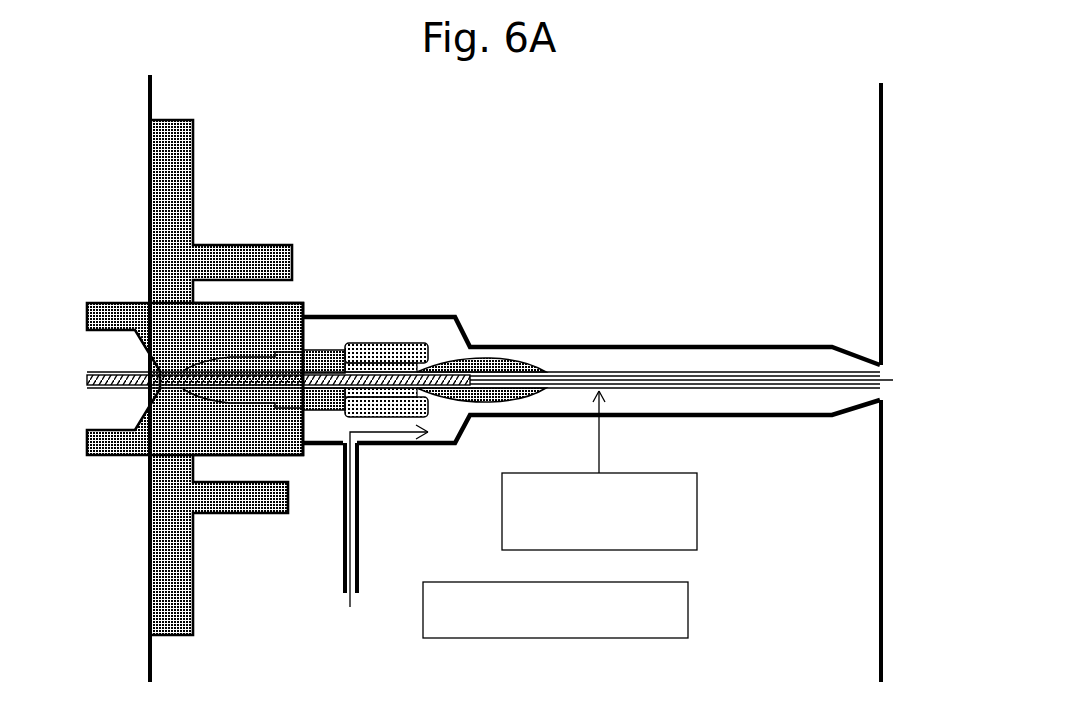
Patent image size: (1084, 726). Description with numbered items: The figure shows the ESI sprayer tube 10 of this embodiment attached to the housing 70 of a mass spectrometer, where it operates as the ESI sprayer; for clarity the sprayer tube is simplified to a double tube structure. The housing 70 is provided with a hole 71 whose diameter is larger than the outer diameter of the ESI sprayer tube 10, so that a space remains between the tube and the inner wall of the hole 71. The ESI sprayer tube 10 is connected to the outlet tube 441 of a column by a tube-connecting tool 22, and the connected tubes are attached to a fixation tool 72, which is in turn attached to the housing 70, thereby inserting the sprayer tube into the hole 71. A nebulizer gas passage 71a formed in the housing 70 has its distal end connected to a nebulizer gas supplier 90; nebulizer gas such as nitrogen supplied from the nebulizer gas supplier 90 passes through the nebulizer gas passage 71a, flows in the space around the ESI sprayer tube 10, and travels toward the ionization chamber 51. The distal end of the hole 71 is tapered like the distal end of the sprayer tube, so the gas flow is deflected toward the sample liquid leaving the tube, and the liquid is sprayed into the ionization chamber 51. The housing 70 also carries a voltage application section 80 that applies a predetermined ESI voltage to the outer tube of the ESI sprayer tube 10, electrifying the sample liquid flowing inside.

The housing 70 is at (381, 214).
The ionization chamber 51 is at (914, 343).
The fixation tool 72 is at (145, 522).
The hole 71 is at (641, 362).
The nebulizer gas passage 71a is at (338, 565).
The ESI sprayer tube 10 is at (695, 365).
The tube-connecting tool 22 is at (481, 364).
The outlet tube 441 is at (432, 396).
The voltage application section 80 is at (700, 500).
The nebulizer gas supplier 90 is at (562, 640).